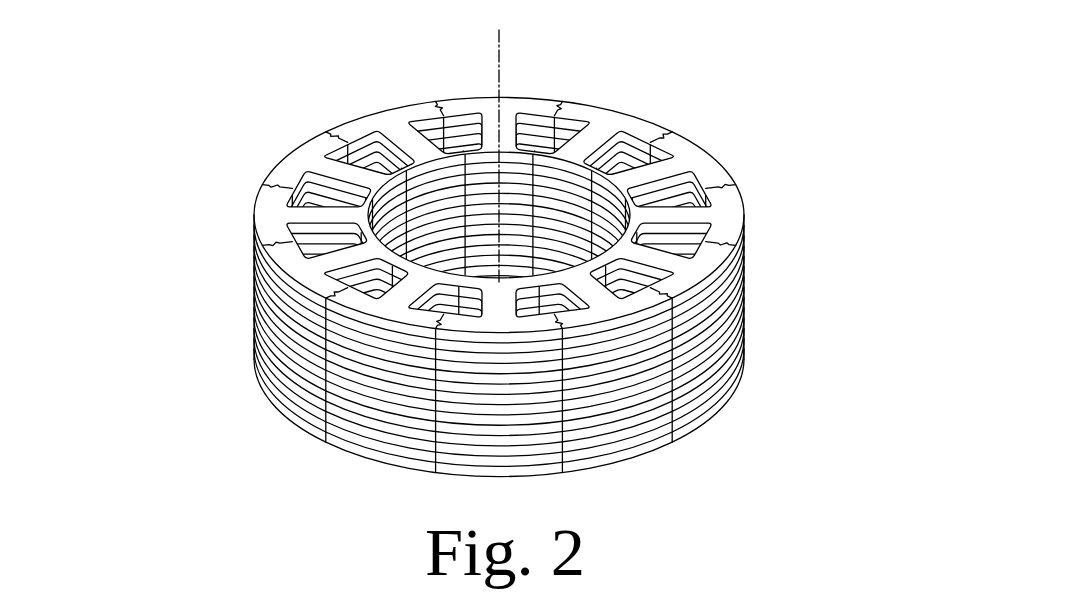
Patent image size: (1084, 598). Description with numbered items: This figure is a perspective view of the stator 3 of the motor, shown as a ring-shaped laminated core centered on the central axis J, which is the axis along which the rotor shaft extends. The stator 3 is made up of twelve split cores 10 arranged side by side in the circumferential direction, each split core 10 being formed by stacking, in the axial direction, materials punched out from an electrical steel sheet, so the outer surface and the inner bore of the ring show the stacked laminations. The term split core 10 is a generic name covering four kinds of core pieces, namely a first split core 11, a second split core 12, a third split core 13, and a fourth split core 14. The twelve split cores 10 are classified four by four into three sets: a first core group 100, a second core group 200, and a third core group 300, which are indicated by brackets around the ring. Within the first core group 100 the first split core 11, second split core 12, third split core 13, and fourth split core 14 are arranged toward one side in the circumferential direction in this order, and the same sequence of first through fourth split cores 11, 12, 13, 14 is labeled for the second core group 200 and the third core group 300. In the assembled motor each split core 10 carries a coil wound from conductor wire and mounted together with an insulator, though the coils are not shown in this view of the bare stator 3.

The stator 3 is at (858, 78).
The split core 10 is at (501, 258).
The first split core 11 is at (400, 108).
The second split core 12 is at (507, 126).
The third split core 13 is at (588, 141).
The fourth split core 14 is at (676, 162).
The first core group 100 is at (402, 60).
The second core group 200 is at (895, 150).
The third core group 300 is at (107, 97).
The central axis J is at (498, 36).